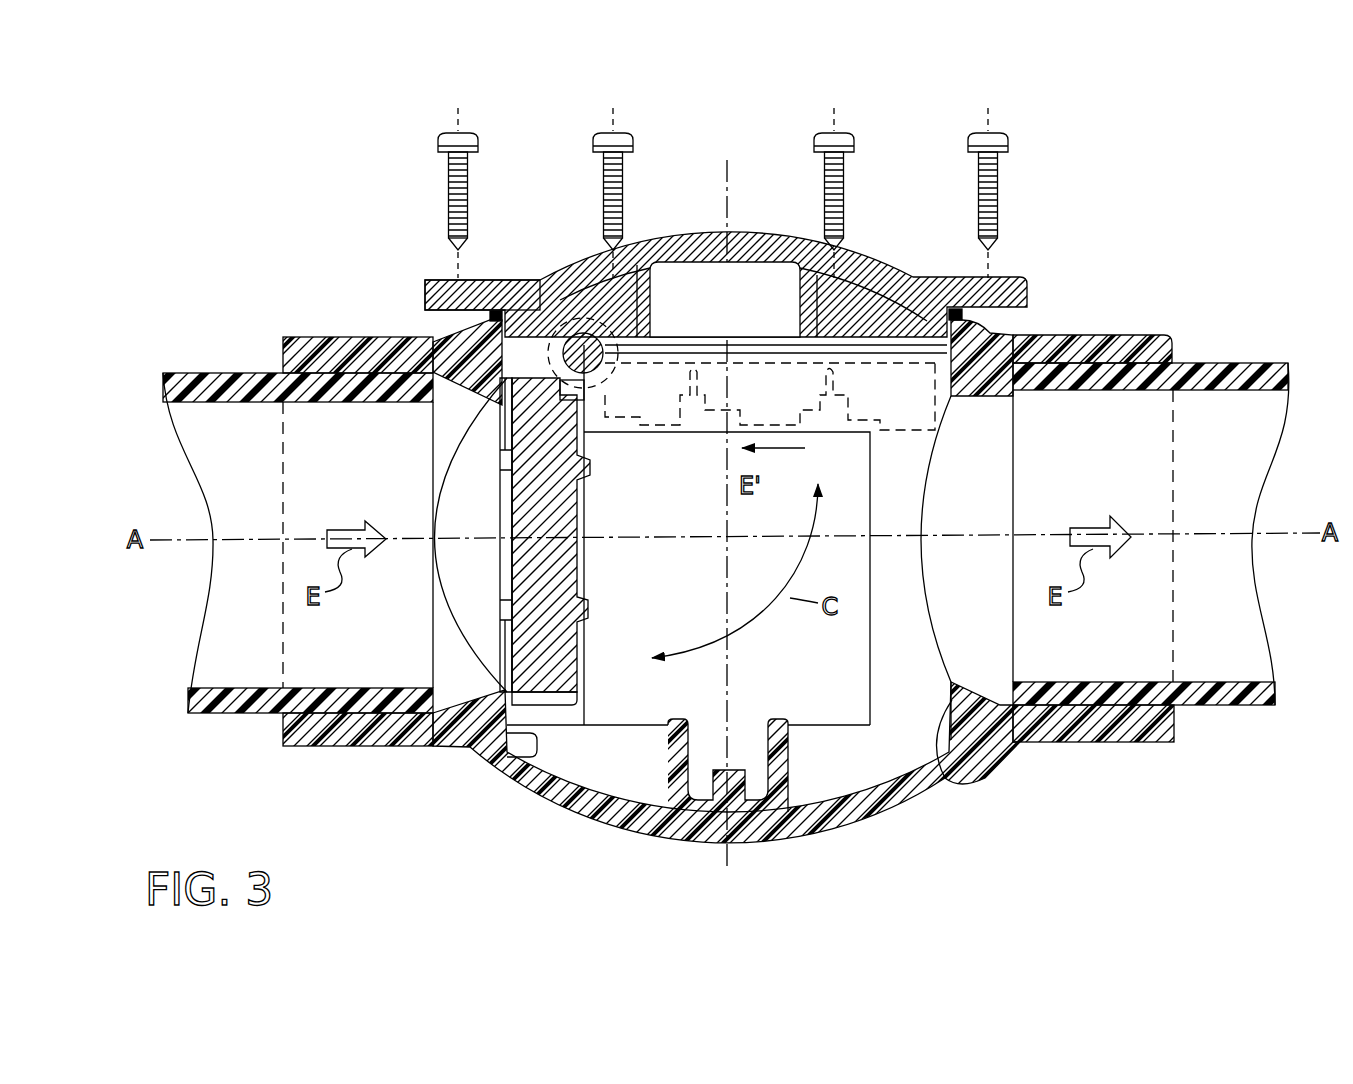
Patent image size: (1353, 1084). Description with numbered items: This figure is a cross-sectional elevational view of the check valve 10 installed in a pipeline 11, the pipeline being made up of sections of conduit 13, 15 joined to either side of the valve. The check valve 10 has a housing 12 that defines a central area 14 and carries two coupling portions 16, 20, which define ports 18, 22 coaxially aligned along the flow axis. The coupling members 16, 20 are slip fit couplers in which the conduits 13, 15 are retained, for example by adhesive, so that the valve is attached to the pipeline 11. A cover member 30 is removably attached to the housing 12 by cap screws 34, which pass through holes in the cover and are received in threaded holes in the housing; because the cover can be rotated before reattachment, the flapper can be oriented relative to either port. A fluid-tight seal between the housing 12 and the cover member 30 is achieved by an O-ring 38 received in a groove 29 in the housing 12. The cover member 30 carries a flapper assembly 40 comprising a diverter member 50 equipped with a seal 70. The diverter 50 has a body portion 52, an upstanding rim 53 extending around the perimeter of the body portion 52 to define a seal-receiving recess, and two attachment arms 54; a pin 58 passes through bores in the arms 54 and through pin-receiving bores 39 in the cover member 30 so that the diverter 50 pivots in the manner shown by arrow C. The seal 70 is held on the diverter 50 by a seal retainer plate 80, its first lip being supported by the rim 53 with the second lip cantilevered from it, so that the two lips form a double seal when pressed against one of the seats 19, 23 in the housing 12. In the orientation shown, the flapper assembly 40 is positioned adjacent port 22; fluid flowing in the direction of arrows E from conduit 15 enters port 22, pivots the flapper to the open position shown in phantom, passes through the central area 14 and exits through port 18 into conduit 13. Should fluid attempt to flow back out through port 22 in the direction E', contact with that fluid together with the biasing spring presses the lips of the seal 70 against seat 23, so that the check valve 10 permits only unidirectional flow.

The check valve 10 is at (1192, 287).
The pipeline 11 is at (235, 740).
The housing 12 is at (908, 797).
The conduit 13 is at (1242, 364).
The central area 14 is at (822, 673).
The conduit 15 is at (165, 373).
The coupling portion 16 is at (1076, 334).
The port 18 is at (1118, 744).
The seat 19 is at (978, 745).
The coupling portion 20 is at (292, 336).
The port 22 is at (335, 748).
The seat 23 is at (502, 745).
The groove 29 is at (488, 318).
The cover member 30 is at (697, 184).
The cap screws 34 is at (478, 140).
The O-ring 38 is at (540, 282).
The pin-receiving bores 39 is at (655, 330).
The flapper assembly 40 is at (575, 692).
The diverter member 50 is at (562, 576).
The body portion 52 is at (550, 517).
The upstanding rim 53 is at (527, 722).
The attachment arms 54 is at (585, 410).
The pin 58 is at (590, 348).
The seal 70 is at (520, 512).
The seal retainer plate 80 is at (510, 655).